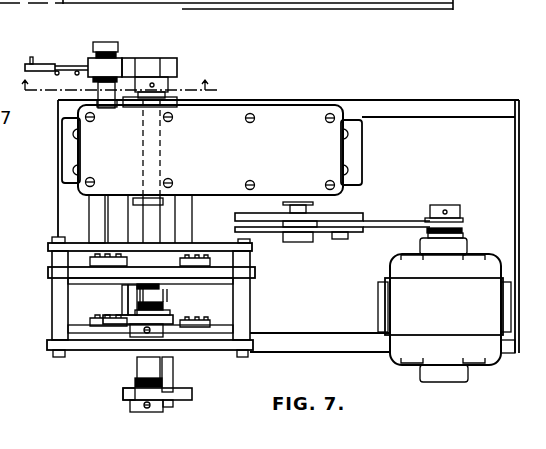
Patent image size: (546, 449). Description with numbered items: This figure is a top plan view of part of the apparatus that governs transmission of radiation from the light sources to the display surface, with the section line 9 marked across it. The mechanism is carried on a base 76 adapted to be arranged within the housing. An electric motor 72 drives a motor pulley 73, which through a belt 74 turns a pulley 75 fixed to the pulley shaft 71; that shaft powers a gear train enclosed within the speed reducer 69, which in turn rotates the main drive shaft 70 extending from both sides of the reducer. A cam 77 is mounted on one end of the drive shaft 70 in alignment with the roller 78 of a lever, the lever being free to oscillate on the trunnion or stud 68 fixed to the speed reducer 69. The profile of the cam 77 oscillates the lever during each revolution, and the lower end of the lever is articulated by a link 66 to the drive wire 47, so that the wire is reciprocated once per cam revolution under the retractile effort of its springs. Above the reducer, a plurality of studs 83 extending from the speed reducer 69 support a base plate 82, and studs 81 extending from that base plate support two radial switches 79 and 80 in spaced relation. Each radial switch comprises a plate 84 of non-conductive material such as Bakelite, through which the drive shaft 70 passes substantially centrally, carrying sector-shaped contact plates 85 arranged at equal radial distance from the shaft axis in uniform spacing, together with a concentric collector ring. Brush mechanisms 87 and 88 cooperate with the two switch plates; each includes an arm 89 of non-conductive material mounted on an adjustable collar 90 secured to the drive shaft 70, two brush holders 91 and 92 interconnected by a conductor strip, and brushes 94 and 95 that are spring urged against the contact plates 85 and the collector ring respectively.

The section line 9 is at (114, 89).
The drive wire 47 is at (24, 52).
The link 66 is at (56, 58).
The trunnion or stud 68 is at (105, 100).
The speed reducer 69 is at (212, 150).
The main rotatable drive shaft 70 is at (162, 148).
The pulley shaft 71 is at (318, 208).
The electric motor 72 is at (444, 310).
The motor pulley 73 is at (462, 222).
The belt 74 is at (403, 223).
The pulley 75 is at (342, 233).
The base 76 is at (288, 226).
The cam 77 is at (178, 64).
The roller 78 is at (108, 66).
The radial switch 79 is at (52, 267).
The radial switch 80 is at (48, 348).
The studs 81 is at (245, 305).
The base plate 82 is at (252, 245).
The studs 83 is at (112, 222).
The plate 84 is at (250, 350).
The contact plates 85 is at (202, 285).
The brush mechanism 87 is at (150, 286).
The brush mechanism 88 is at (126, 398).
The arm 89 is at (188, 396).
The adjustable collar 90 is at (152, 408).
The brush holder 91 is at (137, 370).
The brush holder 92 is at (167, 371).
The brush 94 is at (168, 358).
The brush 95 is at (160, 357).